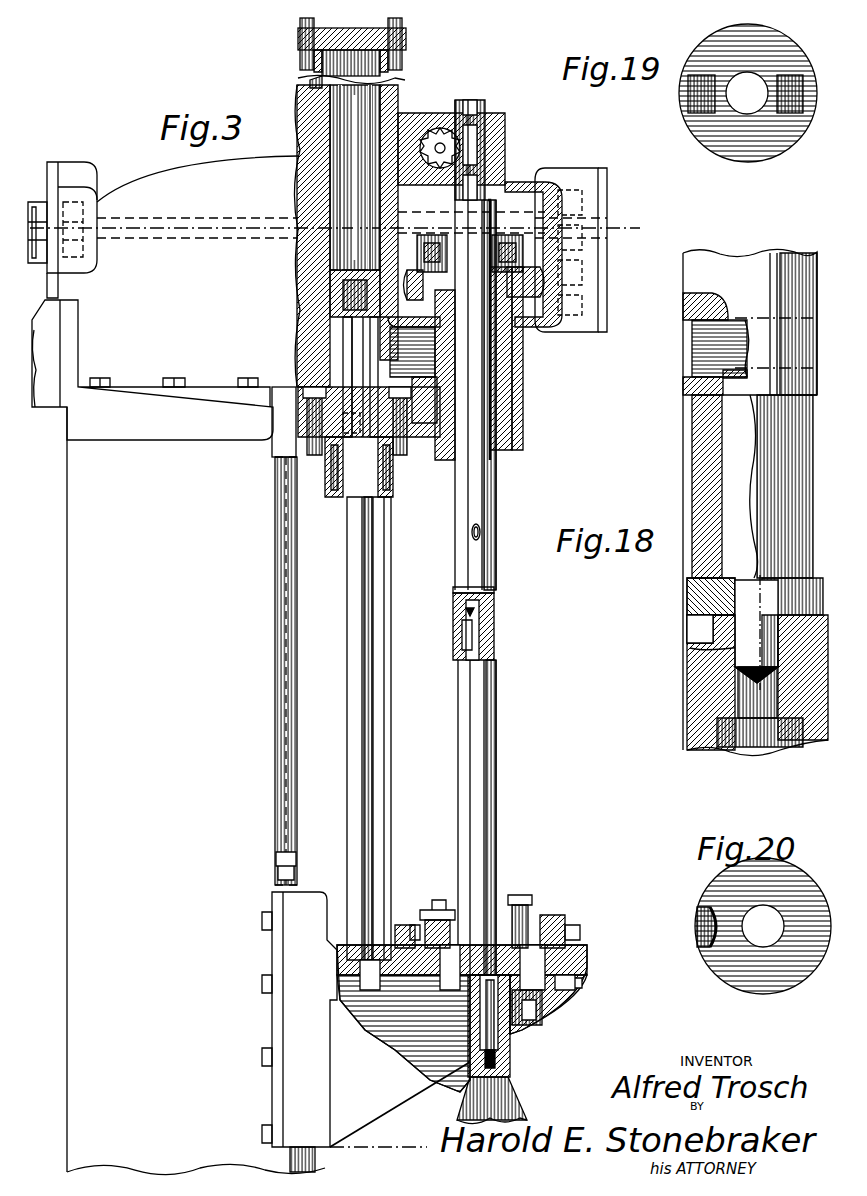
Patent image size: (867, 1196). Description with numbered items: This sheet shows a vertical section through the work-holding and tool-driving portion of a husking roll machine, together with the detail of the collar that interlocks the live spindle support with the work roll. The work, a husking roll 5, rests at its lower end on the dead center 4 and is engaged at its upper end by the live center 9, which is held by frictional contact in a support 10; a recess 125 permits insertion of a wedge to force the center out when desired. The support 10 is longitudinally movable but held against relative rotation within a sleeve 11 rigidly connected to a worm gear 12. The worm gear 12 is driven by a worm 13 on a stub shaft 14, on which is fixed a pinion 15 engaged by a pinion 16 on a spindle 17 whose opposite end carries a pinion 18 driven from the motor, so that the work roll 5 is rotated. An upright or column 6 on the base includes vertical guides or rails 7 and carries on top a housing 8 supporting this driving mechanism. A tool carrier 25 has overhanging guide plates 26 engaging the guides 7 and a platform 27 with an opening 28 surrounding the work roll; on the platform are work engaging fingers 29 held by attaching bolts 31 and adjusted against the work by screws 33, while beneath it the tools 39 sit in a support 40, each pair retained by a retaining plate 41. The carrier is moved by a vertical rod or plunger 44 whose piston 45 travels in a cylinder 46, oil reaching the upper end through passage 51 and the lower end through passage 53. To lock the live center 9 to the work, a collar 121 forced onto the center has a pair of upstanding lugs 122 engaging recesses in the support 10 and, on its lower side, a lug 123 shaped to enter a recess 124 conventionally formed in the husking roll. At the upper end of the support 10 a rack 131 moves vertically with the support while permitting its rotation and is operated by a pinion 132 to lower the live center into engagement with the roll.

In FIG. 3, the dead center 4 is at (228, 822).
In FIG. 3, the husking roll 5 is at (470, 708).
In FIG. 18, the husking roll 5 is at (694, 712).
In FIG. 3, the upright or column 6 is at (84, 648).
In FIG. 3, the vertical guides or rails 7 is at (30, 232).
In FIG. 3, the housing 8 is at (152, 182).
In FIG. 3, the live center 9 is at (496, 610).
In FIG. 18, the live center 9 is at (745, 652).
In FIG. 3, the support 10 is at (496, 570).
In FIG. 18, the support 10 is at (695, 478).
In FIG. 3, the sleeve 11 is at (454, 466).
In FIG. 3, the worm gear 12 is at (530, 298).
In FIG. 3, the worm 13 is at (512, 270).
In FIG. 3, the stub shaft 14 is at (438, 205).
In FIG. 3, the pinion 15 is at (575, 294).
In FIG. 3, the pinion 16 is at (596, 205).
In FIG. 3, the spindle 17 is at (202, 226).
In FIG. 3, the pinion 18 is at (455, 490).
In FIG. 3, the tool carrier 25 is at (378, 1095).
In FIG. 3, the overhanging guide plates 26 is at (272, 952).
In FIG. 3, the platform 27 is at (408, 935).
In FIG. 3, the opening 28 is at (565, 948).
In FIG. 3, the work engaging fingers 29 is at (432, 916).
In FIG. 3, the attaching bolts 31 is at (520, 915).
In FIG. 3, the screws 33 is at (575, 926).
In FIG. 3, the tools 39 is at (546, 1008).
In FIG. 3, the support 40 is at (582, 974).
In FIG. 3, the retaining plate 41 is at (538, 1000).
In FIG. 3, the vertical rod or plunger 44 is at (365, 606).
In FIG. 3, the piston 45 is at (382, 285).
In FIG. 3, the cylinder 46 is at (316, 84).
In FIG. 3, the passage 51 is at (396, 44).
In FIG. 3, the passage 53 is at (308, 432).
In FIG. 18, the collar 121 is at (690, 594).
In FIG. 18, the upstanding lugs 122 is at (700, 580).
In FIG. 19, the upstanding lugs 122 is at (696, 98).
In FIG. 18, the lug 123 is at (692, 624).
In FIG. 20, the lug 123 is at (700, 922).
In FIG. 18, the recess 124 is at (690, 648).
In FIG. 3, the recess 125 is at (470, 532).
In FIG. 18, the recess 125 is at (700, 356).
In FIG. 3, the rack 131 is at (462, 116).
In FIG. 3, the pinion 132 is at (445, 125).